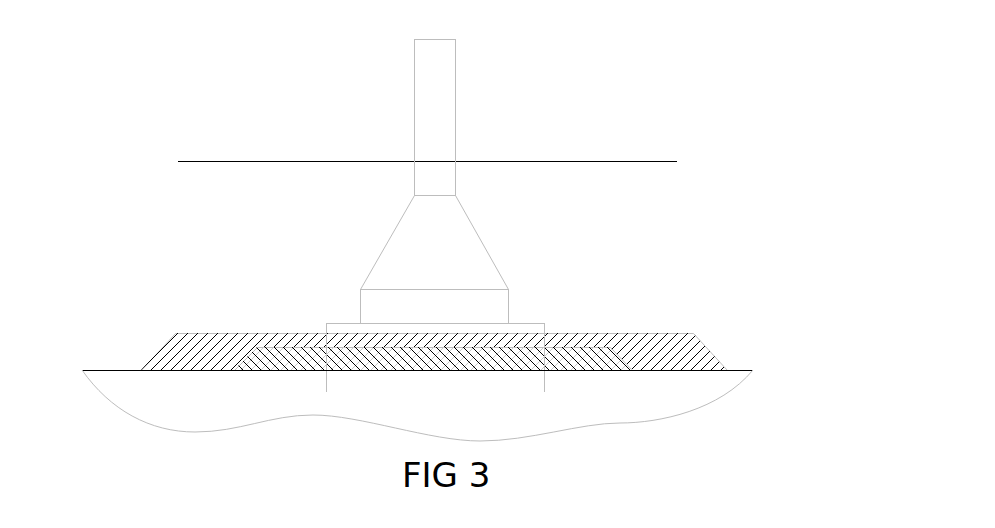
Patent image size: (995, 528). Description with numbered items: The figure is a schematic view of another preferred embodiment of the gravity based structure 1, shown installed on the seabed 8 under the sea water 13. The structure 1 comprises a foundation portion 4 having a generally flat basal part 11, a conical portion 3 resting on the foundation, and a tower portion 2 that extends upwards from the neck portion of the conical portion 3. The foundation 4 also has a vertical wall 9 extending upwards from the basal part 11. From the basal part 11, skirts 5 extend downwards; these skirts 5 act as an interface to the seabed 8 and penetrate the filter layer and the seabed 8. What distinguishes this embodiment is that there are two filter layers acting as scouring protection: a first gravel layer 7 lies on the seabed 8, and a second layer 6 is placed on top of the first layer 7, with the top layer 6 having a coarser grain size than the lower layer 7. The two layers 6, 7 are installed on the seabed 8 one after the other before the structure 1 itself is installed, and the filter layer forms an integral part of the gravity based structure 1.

The gravity based structure 1 is at (336, 118).
The tower portion 2 is at (445, 73).
The conical portion 3 is at (468, 238).
The foundation portion 4 is at (348, 313).
The skirts 5 is at (323, 382).
The second filter layer 6 is at (693, 353).
The first filter layer 7 is at (603, 355).
The seabed 8 is at (102, 370).
The vertical wall 9 is at (500, 307).
The basal part 11 is at (332, 327).
The sea water 13 is at (633, 228).